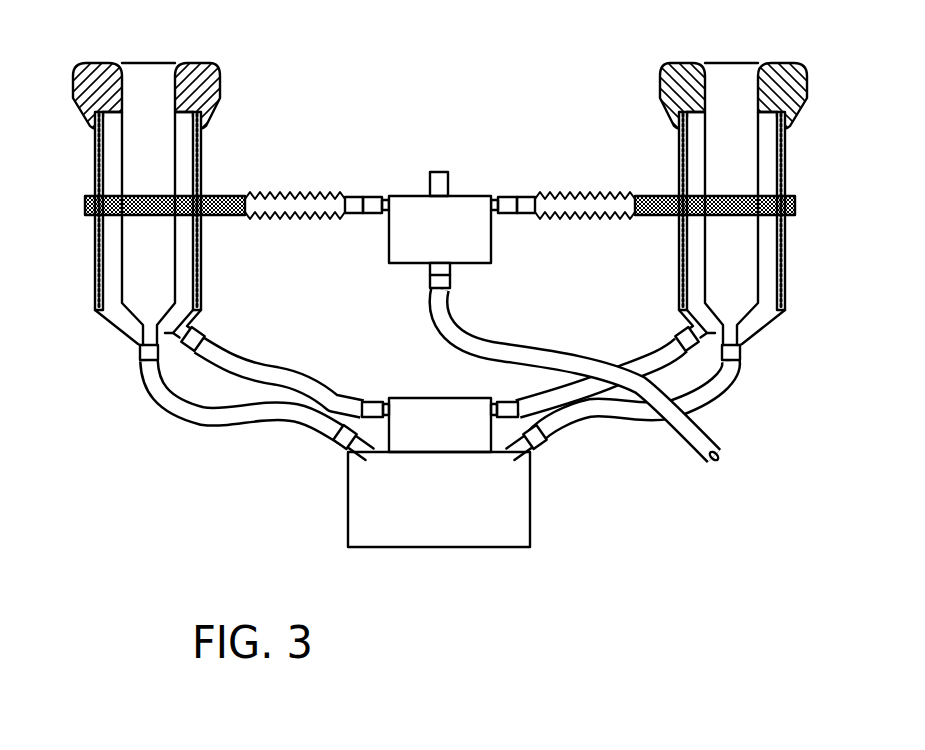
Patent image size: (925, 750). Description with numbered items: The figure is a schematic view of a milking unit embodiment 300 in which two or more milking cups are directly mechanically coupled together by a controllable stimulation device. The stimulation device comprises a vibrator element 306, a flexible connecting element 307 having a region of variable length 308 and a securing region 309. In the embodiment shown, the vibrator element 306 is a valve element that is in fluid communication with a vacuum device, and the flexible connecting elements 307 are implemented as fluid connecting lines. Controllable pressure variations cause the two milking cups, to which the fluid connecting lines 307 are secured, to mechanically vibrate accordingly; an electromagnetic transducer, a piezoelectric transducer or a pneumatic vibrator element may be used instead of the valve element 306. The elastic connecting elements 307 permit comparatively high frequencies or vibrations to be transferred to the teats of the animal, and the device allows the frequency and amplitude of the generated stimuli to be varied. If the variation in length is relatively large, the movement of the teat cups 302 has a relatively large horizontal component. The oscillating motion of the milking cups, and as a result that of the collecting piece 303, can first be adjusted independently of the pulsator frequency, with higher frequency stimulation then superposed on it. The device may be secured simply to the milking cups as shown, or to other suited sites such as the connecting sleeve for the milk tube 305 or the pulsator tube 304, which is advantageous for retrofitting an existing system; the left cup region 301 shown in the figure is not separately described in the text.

The milking unit embodiment 300 is at (417, 311).
The outer tube / container 301 is at (207, 148).
The teat cups 302 is at (185, 240).
The collecting piece 303 is at (437, 523).
The pulsator tube 304 is at (290, 377).
The milk tube 305 is at (252, 417).
The vibrator element 306 is at (463, 200).
The flexible connecting element 307 is at (355, 203).
The region of variable length 308 is at (304, 195).
The securing region 309 is at (140, 196).